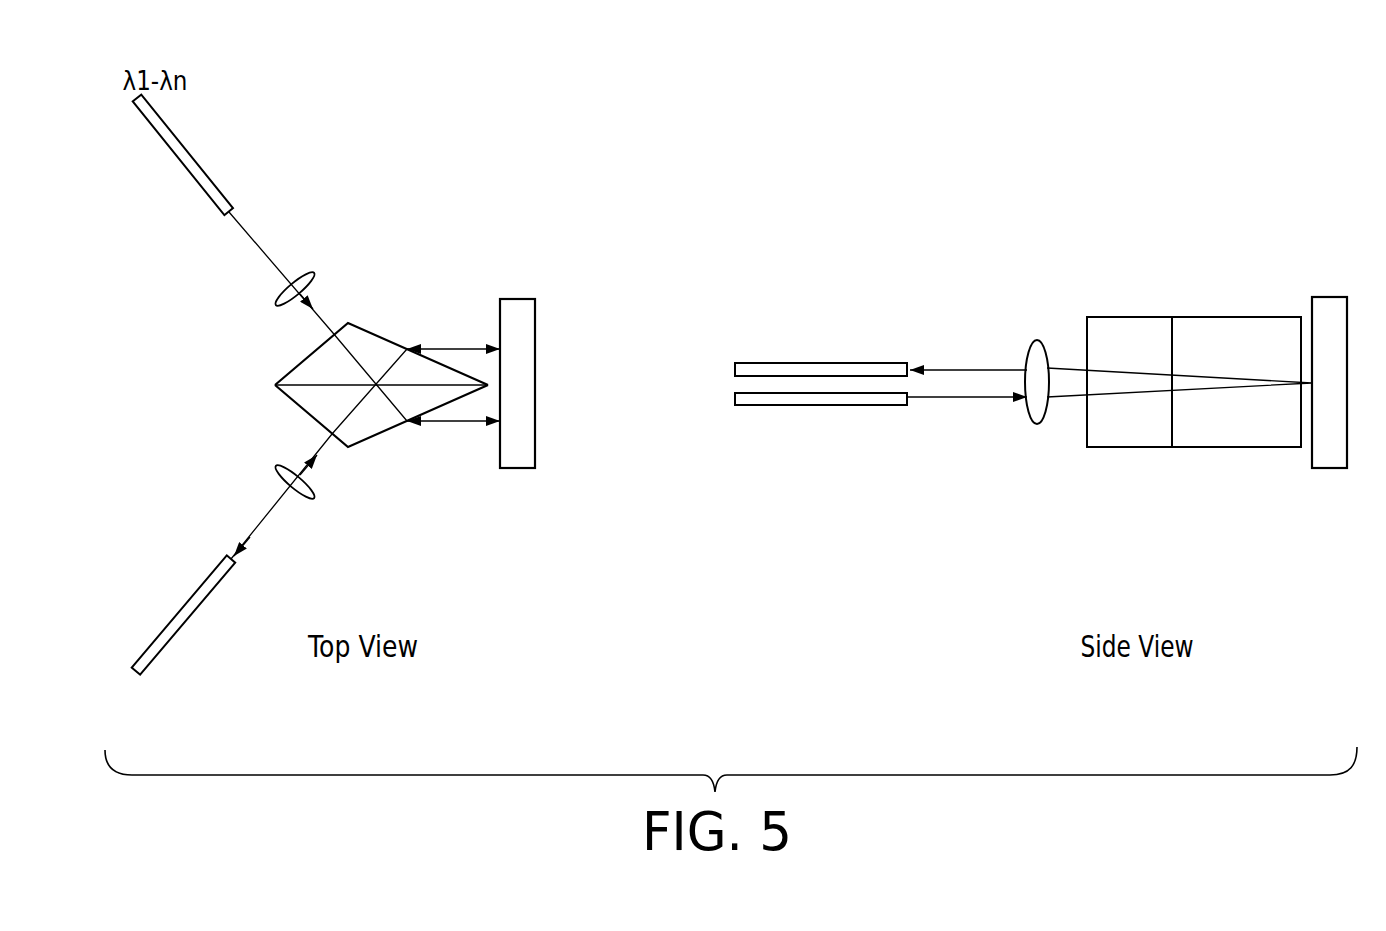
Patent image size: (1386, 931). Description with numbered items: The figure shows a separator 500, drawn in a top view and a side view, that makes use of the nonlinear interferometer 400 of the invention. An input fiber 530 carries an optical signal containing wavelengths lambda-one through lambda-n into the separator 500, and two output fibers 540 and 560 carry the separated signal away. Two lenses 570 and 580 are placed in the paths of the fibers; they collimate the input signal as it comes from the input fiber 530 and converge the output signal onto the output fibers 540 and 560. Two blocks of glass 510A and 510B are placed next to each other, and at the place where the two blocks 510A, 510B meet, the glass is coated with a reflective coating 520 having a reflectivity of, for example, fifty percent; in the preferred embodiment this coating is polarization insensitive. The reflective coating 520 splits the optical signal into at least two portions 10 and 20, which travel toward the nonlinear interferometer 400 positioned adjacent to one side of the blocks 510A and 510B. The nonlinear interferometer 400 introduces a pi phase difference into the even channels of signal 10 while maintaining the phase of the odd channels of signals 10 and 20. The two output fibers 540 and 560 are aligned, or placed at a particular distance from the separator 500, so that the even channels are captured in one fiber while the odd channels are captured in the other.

The first portion of optical signal 10 is at (392, 405).
The second portion of optical signal 20 is at (392, 362).
The nonlinear interferometer 400 is at (1332, 471).
The separator 500 is at (1168, 278).
The glass block 510A is at (367, 448).
The glass block 510B is at (365, 322).
The reflective coating 520 is at (292, 389).
The input fiber 530 is at (182, 164).
The output fiber 540 is at (808, 362).
The output fiber 560 is at (183, 605).
The lens 570 is at (313, 273).
The lens 580 is at (313, 494).